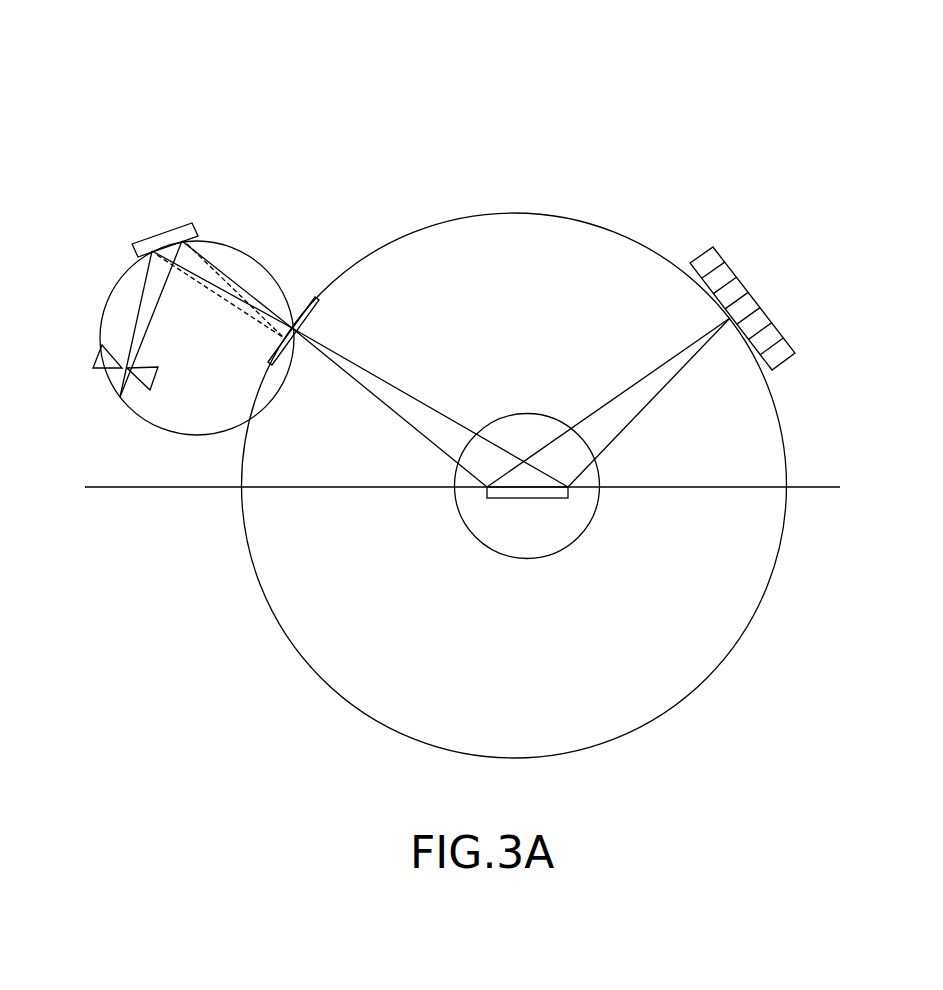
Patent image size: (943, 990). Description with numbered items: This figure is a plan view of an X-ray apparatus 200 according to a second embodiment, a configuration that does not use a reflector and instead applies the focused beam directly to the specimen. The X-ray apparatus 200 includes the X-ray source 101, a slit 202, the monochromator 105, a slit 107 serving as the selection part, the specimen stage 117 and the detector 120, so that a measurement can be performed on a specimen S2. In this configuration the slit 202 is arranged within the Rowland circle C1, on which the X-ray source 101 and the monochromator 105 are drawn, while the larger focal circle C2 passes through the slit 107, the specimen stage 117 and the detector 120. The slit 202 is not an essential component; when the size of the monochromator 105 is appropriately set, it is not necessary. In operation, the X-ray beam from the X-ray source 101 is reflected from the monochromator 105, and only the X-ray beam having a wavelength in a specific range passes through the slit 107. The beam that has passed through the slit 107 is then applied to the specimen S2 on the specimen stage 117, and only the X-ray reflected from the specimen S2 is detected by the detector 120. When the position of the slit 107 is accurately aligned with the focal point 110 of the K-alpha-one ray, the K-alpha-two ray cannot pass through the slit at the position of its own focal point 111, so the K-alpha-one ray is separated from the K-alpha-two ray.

The X-ray apparatus 200 is at (430, 78).
The Rowland circle C1 is at (100, 313).
The focal circle C2 is at (529, 213).
The X-ray source 101 is at (118, 397).
The slit 202 is at (102, 352).
The monochromator 105 is at (155, 233).
The slit (selection part) 107 is at (316, 300).
The focal point 110 is at (293, 333).
The focal position of Kα2 111 is at (280, 343).
The specimen stage 117 is at (519, 413).
The specimen S2 is at (527, 499).
The detector 120 is at (760, 303).